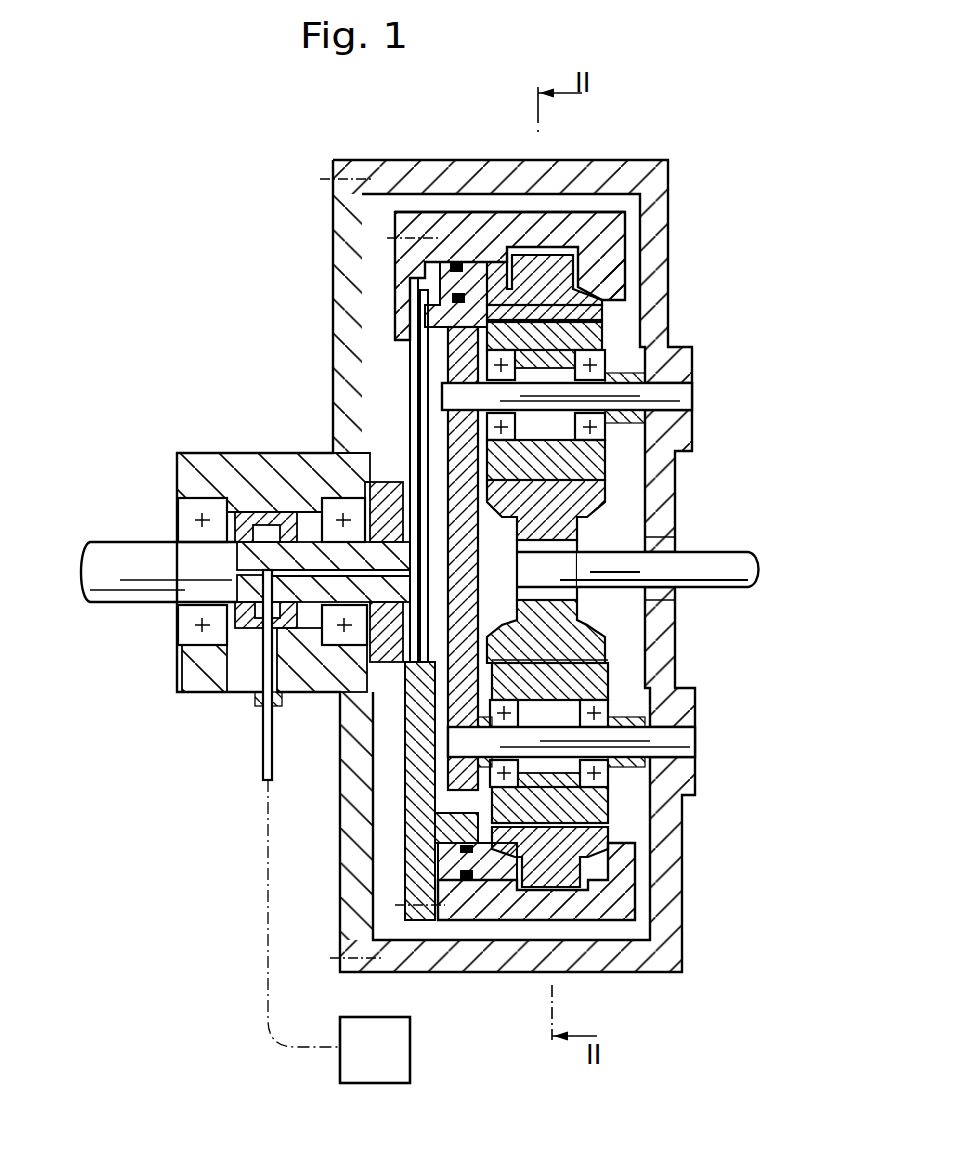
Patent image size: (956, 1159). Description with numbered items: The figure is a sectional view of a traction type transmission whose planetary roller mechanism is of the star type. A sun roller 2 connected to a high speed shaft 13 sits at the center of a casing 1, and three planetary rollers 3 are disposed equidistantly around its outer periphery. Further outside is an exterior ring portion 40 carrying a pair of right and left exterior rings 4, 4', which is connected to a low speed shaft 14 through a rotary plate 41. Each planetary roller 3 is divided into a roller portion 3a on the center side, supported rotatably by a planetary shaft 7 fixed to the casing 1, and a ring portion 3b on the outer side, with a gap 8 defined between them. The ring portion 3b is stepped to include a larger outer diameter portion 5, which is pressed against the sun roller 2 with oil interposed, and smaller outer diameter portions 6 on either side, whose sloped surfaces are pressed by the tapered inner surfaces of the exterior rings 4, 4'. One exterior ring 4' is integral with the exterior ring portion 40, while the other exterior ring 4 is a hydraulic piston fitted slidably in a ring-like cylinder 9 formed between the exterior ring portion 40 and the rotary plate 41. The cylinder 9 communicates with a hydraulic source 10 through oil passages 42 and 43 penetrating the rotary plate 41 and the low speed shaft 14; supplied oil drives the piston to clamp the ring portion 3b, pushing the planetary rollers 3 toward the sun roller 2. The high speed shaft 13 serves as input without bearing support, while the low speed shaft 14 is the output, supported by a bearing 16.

The casing 1 is at (694, 893).
The sun roller 2 is at (548, 598).
The planetary roller 3 is at (610, 338).
The roller portion 3a is at (585, 458).
The ring portion 3b is at (590, 492).
The exterior ring 4 is at (515, 507).
The exterior ring 4' is at (670, 250).
The larger outer diameter portion 5 is at (547, 253).
The smaller outer diameter portion 6 is at (582, 308).
The planetary shaft 7 is at (683, 391).
The gap 8 is at (520, 518).
The ring-like cylinder 9 is at (413, 277).
The hydraulic source 10 is at (410, 1055).
The high speed shaft 13 is at (724, 553).
The low speed shaft 14 is at (130, 553).
The bearing 16 is at (208, 637).
The exterior ring portion 40 is at (527, 203).
The rotary plate 41 is at (405, 343).
The oil passage 42 is at (413, 393).
The oil passage 43 is at (313, 555).